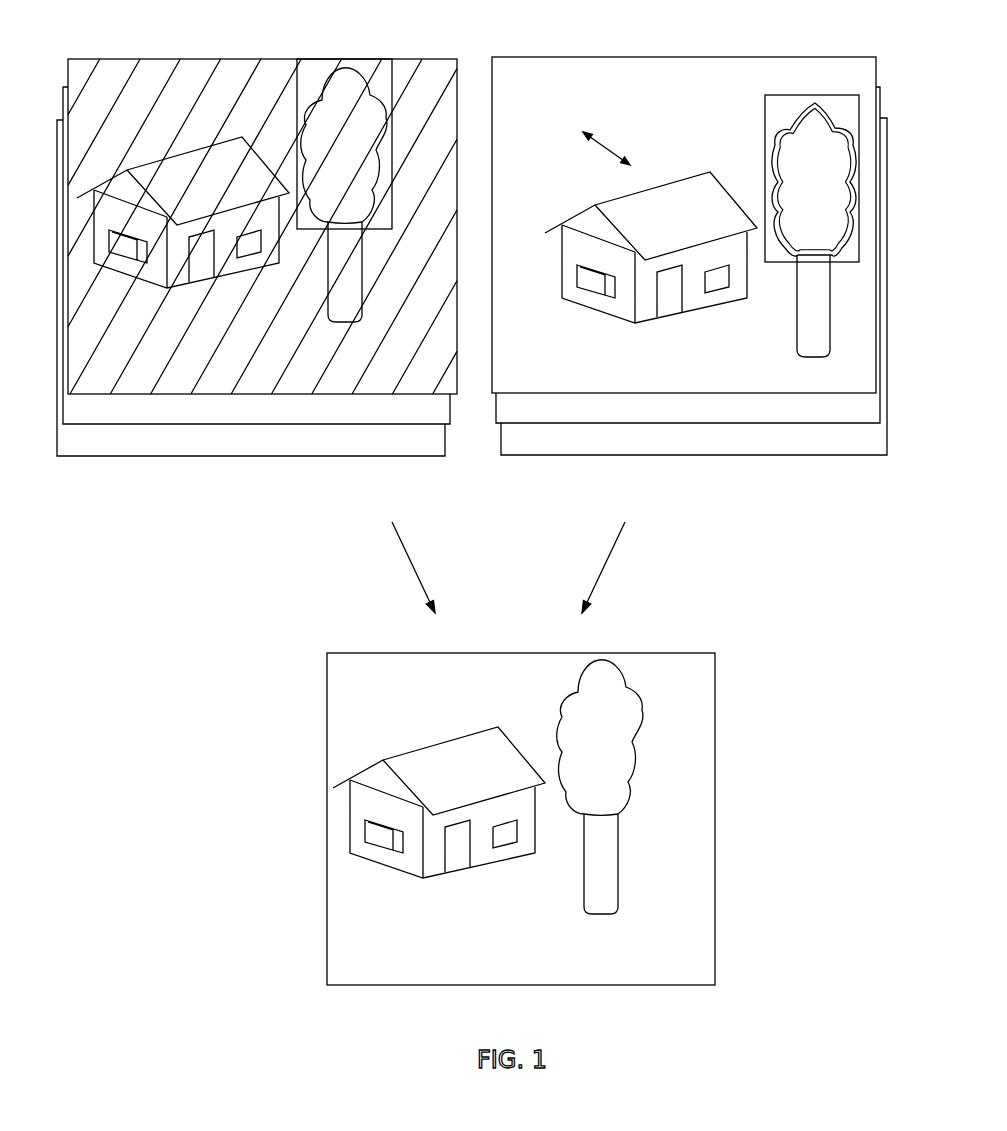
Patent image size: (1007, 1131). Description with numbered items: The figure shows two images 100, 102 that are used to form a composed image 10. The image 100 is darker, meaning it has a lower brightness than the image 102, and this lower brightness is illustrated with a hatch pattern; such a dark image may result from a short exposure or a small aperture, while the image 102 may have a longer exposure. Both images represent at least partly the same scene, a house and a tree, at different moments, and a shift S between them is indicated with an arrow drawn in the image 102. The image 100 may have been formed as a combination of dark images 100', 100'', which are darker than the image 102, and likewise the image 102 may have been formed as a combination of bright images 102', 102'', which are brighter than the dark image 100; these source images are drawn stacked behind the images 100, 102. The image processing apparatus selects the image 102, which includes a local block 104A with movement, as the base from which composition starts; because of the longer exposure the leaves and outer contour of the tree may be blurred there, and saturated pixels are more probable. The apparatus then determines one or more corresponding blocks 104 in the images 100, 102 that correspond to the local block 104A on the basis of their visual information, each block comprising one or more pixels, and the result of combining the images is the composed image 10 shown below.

The composed image 10 is at (697, 652).
The image 100 is at (262, 211).
The dark image 100' is at (256, 286).
The dark image 100'' is at (251, 307).
The image 102 is at (684, 210).
The bright image 102' is at (712, 291).
The bright image 102'' is at (694, 306).
The corresponding block 104 is at (370, 62).
The local block 104A is at (858, 240).